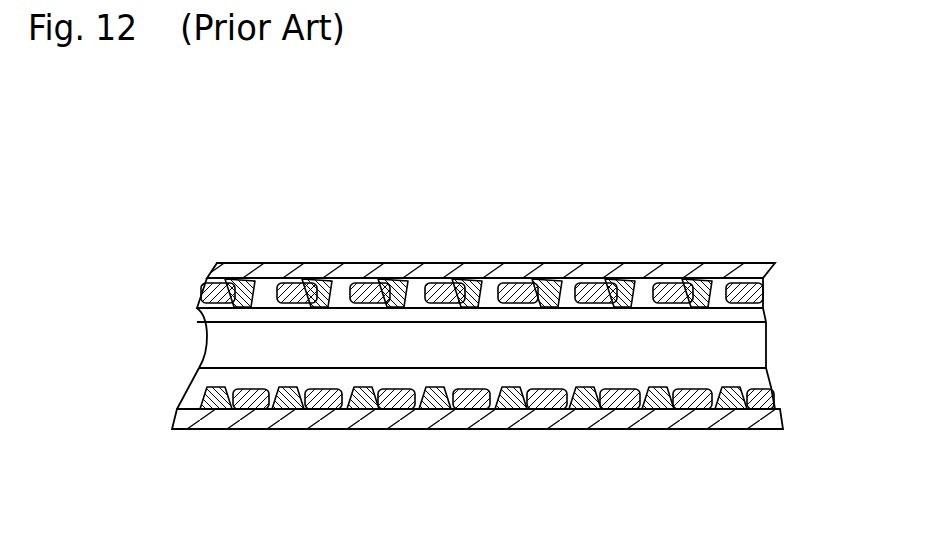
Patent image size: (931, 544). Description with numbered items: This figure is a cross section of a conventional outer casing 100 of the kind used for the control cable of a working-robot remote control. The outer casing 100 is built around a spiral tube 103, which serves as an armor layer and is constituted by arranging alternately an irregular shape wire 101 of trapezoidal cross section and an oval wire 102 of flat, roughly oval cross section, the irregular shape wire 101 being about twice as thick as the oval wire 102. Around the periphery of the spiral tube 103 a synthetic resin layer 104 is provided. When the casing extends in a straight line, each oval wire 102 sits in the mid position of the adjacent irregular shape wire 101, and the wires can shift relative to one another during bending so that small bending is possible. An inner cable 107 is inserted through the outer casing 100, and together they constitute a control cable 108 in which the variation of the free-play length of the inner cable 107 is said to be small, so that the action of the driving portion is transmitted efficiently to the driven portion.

The outer casing 100 is at (477, 313).
The irregular shape wire 101 is at (553, 279).
The oval wire 102 is at (612, 283).
The spiral tube 103 is at (480, 225).
The synthetic resin layer 104 is at (428, 268).
The inner cable 107 is at (766, 326).
The control cable 108 is at (512, 286).